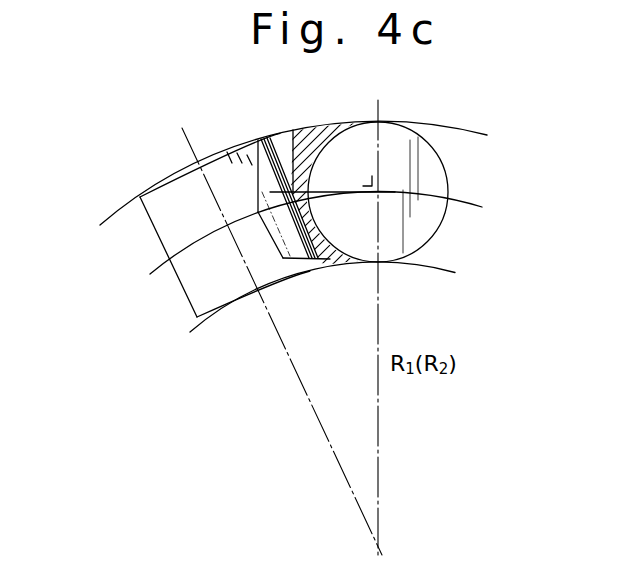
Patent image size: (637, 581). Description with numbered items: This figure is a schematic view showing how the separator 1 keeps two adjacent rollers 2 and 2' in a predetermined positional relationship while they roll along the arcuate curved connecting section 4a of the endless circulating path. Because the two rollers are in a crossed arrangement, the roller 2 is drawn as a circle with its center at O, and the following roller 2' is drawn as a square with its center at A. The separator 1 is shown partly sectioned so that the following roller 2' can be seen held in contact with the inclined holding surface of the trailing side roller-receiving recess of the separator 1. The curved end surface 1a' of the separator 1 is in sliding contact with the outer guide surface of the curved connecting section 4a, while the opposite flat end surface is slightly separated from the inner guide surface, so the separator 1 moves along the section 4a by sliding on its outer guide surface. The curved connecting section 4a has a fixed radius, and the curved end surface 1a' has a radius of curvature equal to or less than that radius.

The separator 1 is at (290, 254).
The curved end surface 1a' is at (335, 179).
The roller 2 is at (392, 192).
The following roller 2' is at (295, 232).
The curved connecting section 4a is at (118, 210).
The center of the following roller A is at (212, 219).
The center of the roller O is at (390, 179).